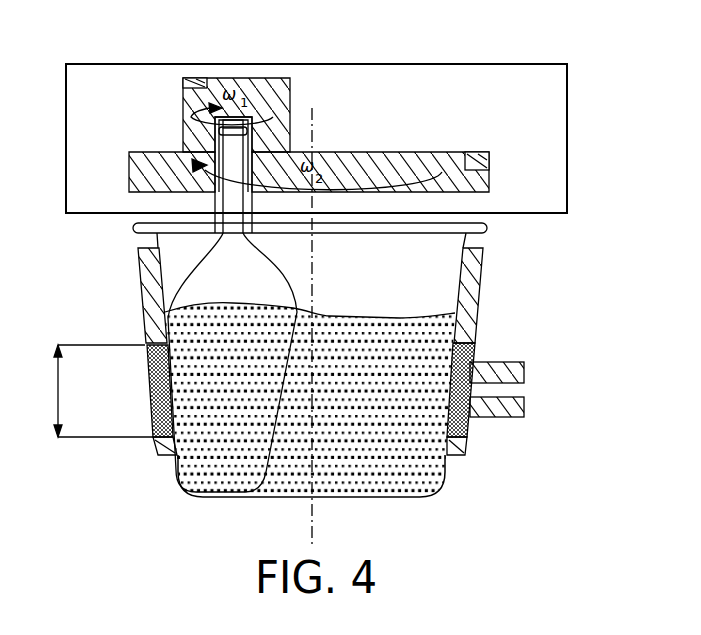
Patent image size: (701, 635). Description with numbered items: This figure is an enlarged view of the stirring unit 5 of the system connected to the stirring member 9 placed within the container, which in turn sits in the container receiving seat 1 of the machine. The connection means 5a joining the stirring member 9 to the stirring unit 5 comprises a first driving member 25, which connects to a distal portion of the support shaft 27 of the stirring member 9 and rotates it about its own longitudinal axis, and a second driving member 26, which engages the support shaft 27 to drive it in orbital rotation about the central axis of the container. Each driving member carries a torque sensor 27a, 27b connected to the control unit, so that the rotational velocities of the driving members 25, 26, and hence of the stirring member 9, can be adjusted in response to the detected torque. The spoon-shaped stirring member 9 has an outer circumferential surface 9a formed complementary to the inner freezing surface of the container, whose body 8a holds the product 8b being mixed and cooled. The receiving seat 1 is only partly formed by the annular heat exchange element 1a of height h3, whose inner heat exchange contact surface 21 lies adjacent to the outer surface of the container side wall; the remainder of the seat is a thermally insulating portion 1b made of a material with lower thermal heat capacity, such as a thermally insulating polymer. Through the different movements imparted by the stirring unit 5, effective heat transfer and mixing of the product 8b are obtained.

The container receiving seat 1 is at (140, 278).
The heat exchange element 1a is at (147, 383).
The thermally insulating portion 1b is at (153, 445).
The stirring unit 5 is at (567, 112).
The connection means 5a is at (272, 78).
The body of the container 8a is at (462, 270).
The product 8b is at (383, 483).
The stirring member 9 is at (238, 295).
The outer circumferential surface 9a is at (190, 488).
The inner heat exchange contact surface 21 is at (455, 350).
The first driving member 25 is at (183, 108).
The second driving member 26 is at (130, 172).
The support shaft 27 is at (220, 143).
The torque sensor 27a is at (489, 161).
The torque sensor 27b is at (192, 78).
The height of the annular heat exchange element h3 is at (92, 391).